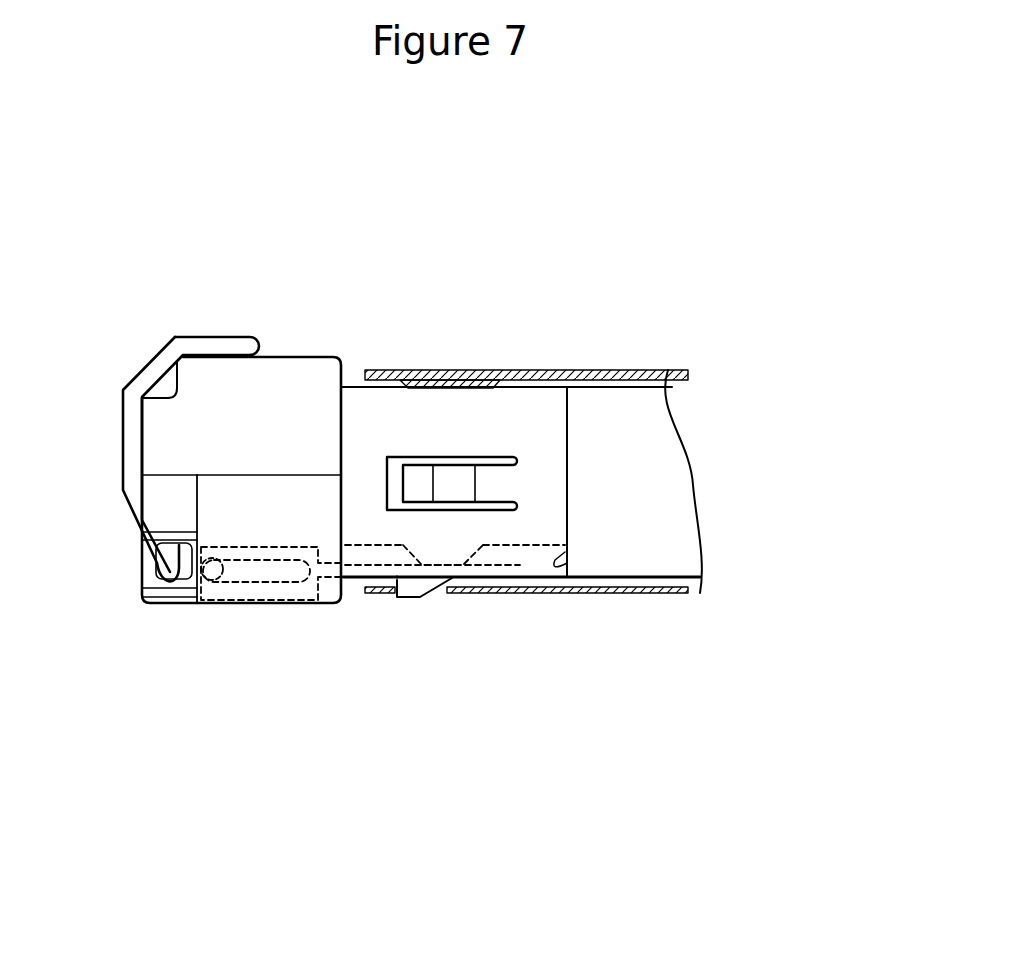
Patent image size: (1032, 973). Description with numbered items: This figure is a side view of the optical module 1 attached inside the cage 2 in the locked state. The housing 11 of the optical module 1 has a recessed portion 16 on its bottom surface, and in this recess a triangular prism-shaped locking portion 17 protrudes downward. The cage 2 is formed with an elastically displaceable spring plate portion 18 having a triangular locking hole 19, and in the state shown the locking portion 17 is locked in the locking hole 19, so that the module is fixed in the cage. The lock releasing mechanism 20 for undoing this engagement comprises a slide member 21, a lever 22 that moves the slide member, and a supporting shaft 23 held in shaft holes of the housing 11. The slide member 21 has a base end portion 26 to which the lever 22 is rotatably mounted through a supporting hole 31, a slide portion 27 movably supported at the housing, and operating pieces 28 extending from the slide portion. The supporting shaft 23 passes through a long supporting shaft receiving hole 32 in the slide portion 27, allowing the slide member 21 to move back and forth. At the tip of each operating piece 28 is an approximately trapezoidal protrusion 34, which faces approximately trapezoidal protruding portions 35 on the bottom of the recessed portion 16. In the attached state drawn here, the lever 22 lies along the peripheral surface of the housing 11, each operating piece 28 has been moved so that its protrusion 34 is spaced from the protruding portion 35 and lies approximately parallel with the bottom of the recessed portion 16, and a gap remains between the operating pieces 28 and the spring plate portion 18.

The optical module 1 is at (176, 263).
The cage 2 is at (557, 366).
The housing 11 is at (337, 363).
The recessed portion 16 is at (567, 563).
The locking portion 17 is at (410, 598).
The spring plate portion 18 is at (388, 596).
The locking hole 19 is at (455, 597).
The lock releasing mechanism 20 is at (371, 737).
The slide member 21 is at (177, 598).
The lever 22 is at (132, 423).
The supporting shaft 23 is at (208, 558).
The base end portion 26 is at (138, 562).
The slide portion 27 is at (217, 580).
The operating piece 28 is at (362, 565).
The supporting hole 31 is at (180, 594).
The supporting shaft receiving hole 32 is at (287, 563).
The protrusion 34 is at (455, 548).
The protruding portion 35 is at (515, 505).